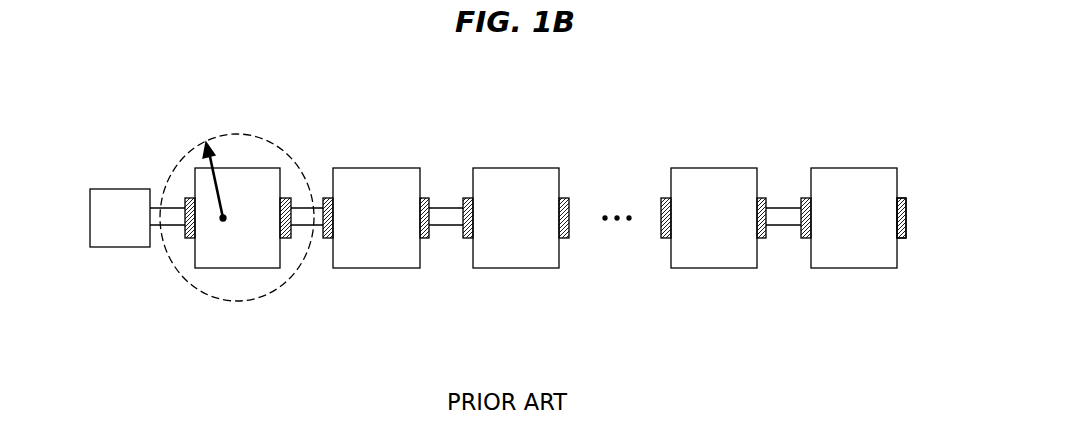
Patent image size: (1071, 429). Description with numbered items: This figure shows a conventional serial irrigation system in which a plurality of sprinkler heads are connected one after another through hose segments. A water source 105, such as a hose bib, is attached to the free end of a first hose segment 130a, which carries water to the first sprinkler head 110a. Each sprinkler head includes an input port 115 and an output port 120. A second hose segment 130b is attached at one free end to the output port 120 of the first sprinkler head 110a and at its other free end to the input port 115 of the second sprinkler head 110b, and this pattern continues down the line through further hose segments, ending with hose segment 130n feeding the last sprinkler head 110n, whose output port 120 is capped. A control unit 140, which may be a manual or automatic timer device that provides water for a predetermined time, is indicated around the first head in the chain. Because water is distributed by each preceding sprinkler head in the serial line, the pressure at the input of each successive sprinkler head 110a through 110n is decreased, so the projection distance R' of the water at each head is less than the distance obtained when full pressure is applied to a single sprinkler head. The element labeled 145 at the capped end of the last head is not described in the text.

The water source 105 is at (120, 189).
The control unit 140 is at (253, 168).
The first hose segment 130a is at (303, 207).
The second hose segment 130b is at (445, 207).
The hose segment 130n is at (780, 207).
The first sprinkler head 110a is at (378, 168).
The second sprinkler head 110b is at (517, 168).
The last sprinkler head 110n is at (850, 168).
The input port 115 is at (190, 238).
The output port 120 is at (286, 238).
The output 145 is at (908, 218).